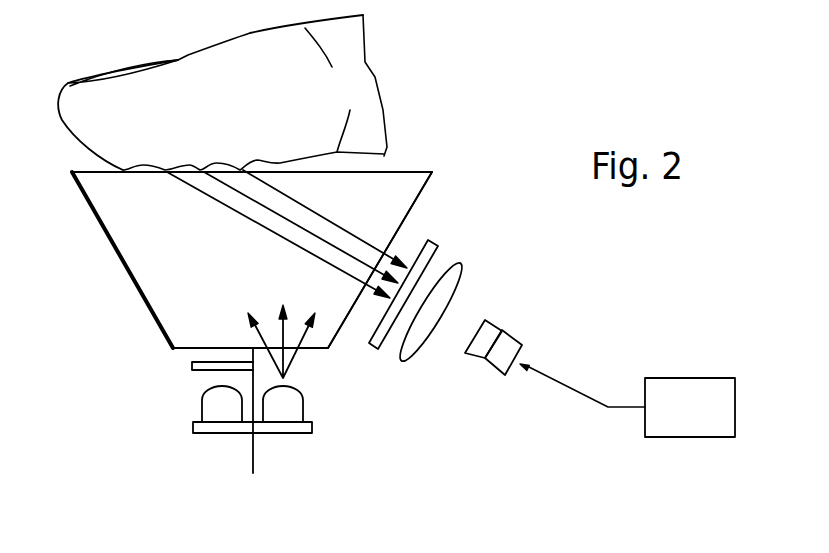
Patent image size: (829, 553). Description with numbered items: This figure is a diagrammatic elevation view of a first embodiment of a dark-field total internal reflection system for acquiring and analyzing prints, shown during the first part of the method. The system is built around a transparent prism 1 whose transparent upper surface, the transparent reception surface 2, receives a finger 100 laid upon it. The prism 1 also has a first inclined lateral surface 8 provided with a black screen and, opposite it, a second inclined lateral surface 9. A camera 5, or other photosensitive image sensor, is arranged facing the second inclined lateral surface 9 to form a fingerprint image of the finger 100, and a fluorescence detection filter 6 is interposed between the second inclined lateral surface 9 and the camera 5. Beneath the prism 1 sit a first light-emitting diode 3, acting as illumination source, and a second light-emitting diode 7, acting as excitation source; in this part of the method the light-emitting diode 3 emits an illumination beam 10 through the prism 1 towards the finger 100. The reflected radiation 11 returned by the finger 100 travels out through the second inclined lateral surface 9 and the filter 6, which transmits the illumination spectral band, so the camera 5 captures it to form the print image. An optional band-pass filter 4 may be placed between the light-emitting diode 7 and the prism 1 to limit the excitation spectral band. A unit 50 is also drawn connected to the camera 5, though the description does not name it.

The finger 100 is at (375, 78).
The transparent reception surface 2 is at (395, 150).
The transparent prism 1 is at (128, 237).
The first inclined lateral surface 8 is at (132, 299).
The second inclined lateral surface 9 is at (432, 205).
The reflected radiation 11 is at (247, 218).
The illumination beam 10 is at (297, 355).
The fluorescence detection filter 6 is at (440, 247).
The band-pass filter 4 is at (192, 364).
The first light-emitting diode 3 is at (290, 408).
The second light-emitting diode 7 is at (202, 410).
The camera 5 is at (505, 338).
The processing unit 50 is at (682, 425).